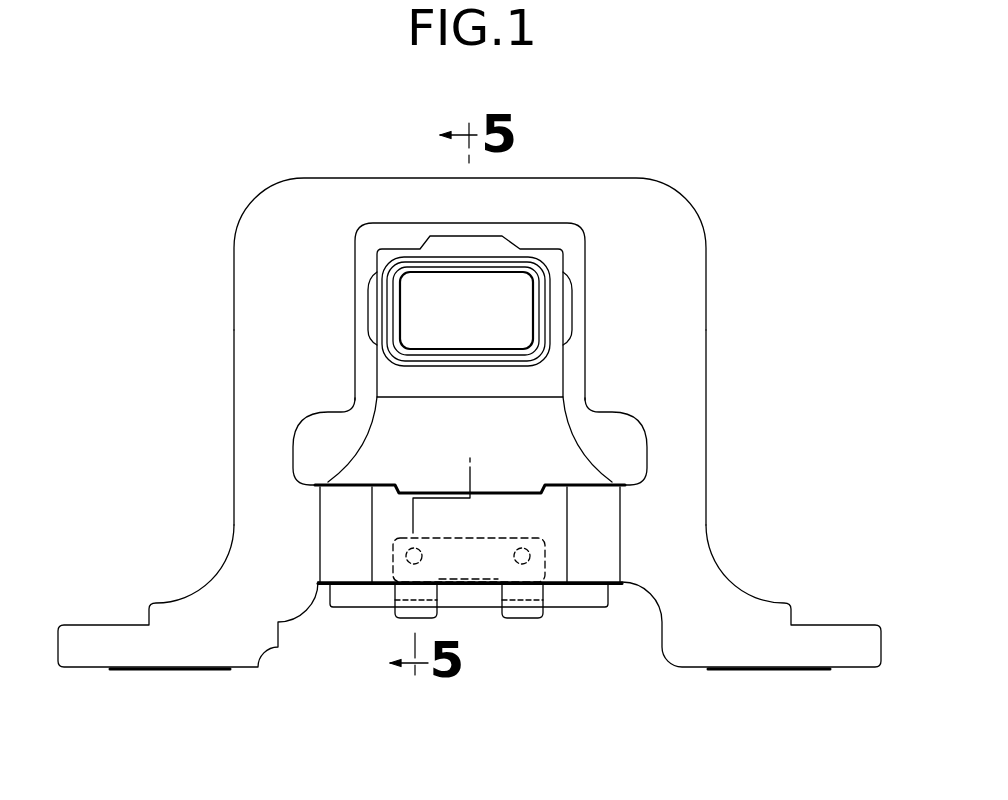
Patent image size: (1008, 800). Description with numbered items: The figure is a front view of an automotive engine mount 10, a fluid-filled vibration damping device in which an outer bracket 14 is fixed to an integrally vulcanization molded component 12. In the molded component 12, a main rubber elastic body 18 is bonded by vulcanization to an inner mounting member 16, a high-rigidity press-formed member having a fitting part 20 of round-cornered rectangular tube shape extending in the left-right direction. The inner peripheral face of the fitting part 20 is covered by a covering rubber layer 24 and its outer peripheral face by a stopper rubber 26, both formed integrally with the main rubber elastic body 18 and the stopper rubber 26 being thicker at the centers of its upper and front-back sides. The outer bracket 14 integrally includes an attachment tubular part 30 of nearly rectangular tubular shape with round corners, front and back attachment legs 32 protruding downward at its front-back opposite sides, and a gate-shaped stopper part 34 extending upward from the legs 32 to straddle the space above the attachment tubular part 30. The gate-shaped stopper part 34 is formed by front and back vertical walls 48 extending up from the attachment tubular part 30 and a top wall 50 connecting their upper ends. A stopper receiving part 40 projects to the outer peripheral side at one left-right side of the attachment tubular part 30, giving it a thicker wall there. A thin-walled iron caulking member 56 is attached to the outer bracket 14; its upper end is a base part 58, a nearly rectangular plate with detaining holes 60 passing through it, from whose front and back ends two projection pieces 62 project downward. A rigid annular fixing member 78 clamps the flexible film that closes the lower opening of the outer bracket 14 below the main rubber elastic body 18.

The engine mount 10 is at (780, 273).
The integrally vulcanization molded component 12 is at (603, 448).
The outer bracket 14 is at (722, 493).
The inner mounting member 16 is at (387, 260).
The main rubber elastic body 18 is at (393, 447).
The fitting part 20 is at (428, 260).
The covering rubber layer 24 is at (523, 267).
The stopper rubber 26 is at (373, 300).
The attachment tubular part 30 is at (343, 532).
The attachment legs 32 is at (200, 610).
The gate-shaped stopper part 34 is at (698, 218).
The stopper receiving part 40 is at (543, 525).
The vertical walls 48 is at (300, 350).
The top wall 50 is at (523, 200).
The caulking member 56 is at (548, 592).
The base part 58 is at (465, 558).
The detaining holes 60 is at (407, 558).
The projection pieces 62 is at (410, 608).
The fixing member 78 is at (612, 598).